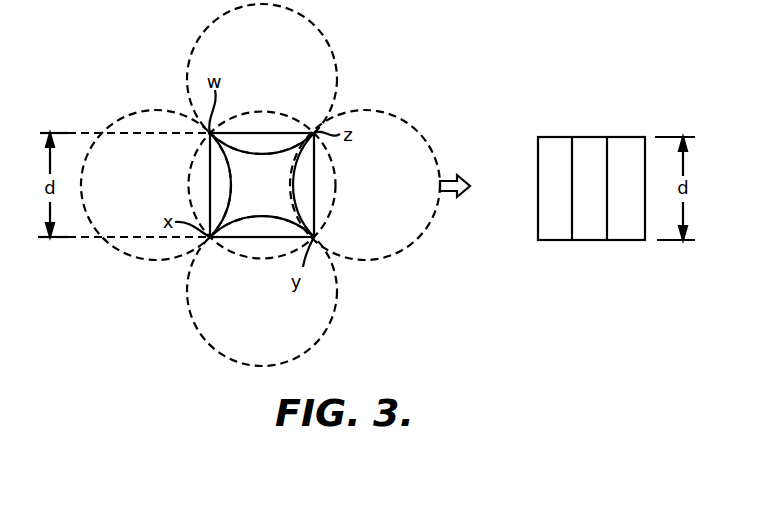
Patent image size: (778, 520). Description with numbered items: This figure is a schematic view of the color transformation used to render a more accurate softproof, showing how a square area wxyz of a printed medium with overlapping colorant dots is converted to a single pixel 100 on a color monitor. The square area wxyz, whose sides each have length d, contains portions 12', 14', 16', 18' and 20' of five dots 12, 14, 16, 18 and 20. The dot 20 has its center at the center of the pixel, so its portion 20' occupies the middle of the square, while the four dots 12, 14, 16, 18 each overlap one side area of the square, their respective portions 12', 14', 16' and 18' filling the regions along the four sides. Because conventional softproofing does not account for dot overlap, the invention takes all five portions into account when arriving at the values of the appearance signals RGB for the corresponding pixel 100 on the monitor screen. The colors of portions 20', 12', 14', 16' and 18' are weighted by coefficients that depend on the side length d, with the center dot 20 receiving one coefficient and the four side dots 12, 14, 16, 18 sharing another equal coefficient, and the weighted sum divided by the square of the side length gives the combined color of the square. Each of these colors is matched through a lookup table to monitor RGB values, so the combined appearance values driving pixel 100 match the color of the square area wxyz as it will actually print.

The dot 12 is at (156, 185).
The dot 14 is at (262, 79).
The dot 16 is at (365, 185).
The dot 18 is at (262, 291).
The dot 20 is at (237, 210).
The portion of dot 12' is at (191, 185).
The portion of dot 14' is at (262, 119).
The portion of dot 16' is at (332, 185).
The portion of dot 18' is at (262, 254).
The portion of dot 20' is at (262, 185).
The pixel 100 is at (629, 137).